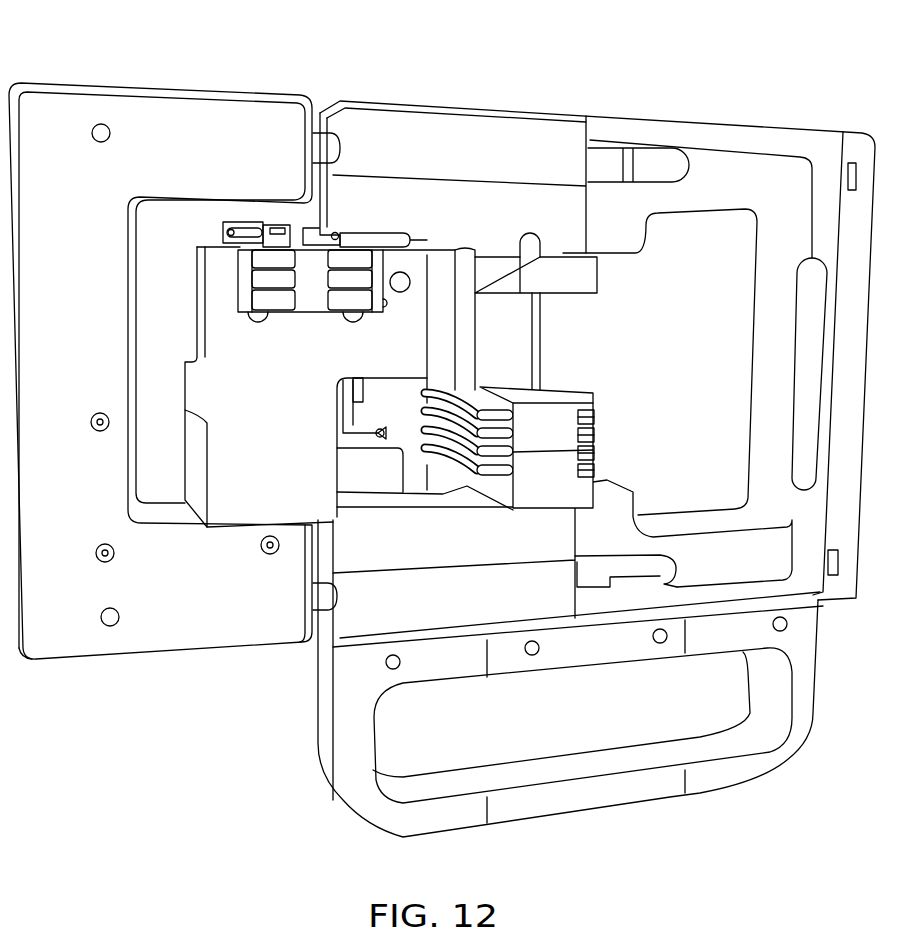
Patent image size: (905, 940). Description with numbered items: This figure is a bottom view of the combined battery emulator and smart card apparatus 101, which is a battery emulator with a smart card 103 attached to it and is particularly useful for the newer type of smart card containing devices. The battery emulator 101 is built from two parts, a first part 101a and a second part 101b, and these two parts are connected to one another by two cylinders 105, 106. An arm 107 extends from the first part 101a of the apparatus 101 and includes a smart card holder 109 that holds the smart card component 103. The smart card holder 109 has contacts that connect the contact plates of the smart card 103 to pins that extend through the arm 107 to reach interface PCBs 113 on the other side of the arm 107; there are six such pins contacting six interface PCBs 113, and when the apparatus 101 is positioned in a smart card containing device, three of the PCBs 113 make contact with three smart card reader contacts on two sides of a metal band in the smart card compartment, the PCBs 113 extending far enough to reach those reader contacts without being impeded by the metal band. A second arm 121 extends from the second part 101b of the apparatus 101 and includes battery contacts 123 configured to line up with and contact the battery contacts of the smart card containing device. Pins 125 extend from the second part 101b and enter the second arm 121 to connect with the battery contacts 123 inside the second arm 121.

The apparatus 101 is at (405, 60).
The first part 101a is at (262, 108).
The second part 101b is at (450, 120).
The smart card 103 is at (369, 240).
The cylinder 105 is at (327, 147).
The cylinder 106 is at (322, 594).
The arm 107 is at (222, 510).
The smart card holder 109 is at (247, 225).
The interface PCBs 113 is at (335, 283).
The second arm 121 is at (545, 497).
The battery contacts 123 is at (594, 417).
The pins 125 is at (467, 410).